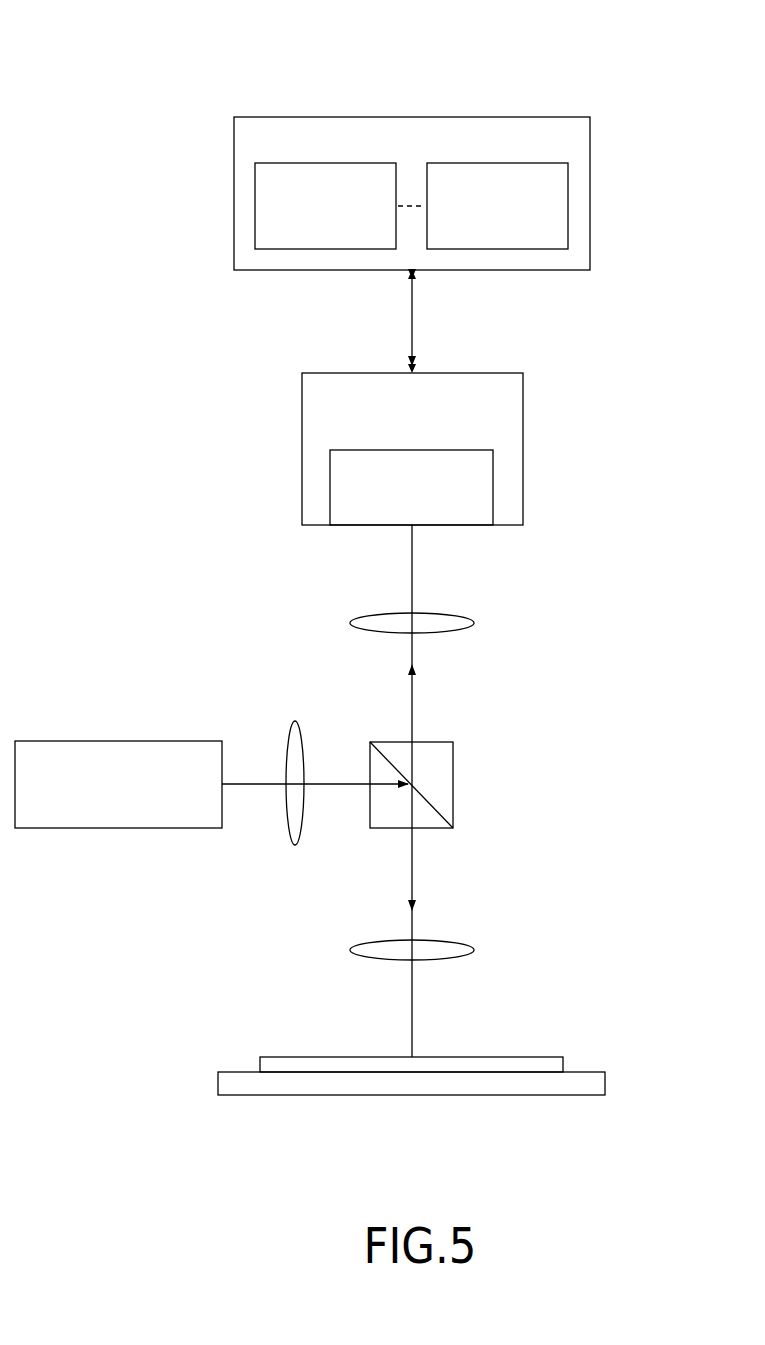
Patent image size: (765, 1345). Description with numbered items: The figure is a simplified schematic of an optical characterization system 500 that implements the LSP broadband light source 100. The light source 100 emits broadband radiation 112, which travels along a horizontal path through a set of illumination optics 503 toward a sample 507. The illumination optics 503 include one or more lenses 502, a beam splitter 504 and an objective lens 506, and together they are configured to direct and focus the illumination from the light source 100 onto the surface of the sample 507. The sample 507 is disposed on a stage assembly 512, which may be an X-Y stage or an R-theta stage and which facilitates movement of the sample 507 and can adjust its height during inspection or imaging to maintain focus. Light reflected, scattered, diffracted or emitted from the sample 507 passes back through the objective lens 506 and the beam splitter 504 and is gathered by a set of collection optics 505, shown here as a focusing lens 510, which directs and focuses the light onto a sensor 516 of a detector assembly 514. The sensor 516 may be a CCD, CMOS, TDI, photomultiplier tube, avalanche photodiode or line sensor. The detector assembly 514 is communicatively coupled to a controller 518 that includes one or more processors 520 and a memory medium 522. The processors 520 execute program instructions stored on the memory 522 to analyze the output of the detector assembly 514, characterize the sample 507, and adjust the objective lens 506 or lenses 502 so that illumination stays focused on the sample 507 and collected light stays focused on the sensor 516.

The optical characterization system 500 is at (120, 51).
The controller 518 is at (432, 152).
The processors 520 is at (346, 219).
The memory medium 522 is at (518, 219).
The detector assembly 514 is at (432, 424).
The sensor 516 is at (432, 501).
The focusing lens 510 is at (460, 614).
The set of illumination optics 503 is at (272, 617).
The set of collection optics 505 is at (507, 705).
The LSP broadband light source 100 is at (138, 796).
The broadband radiation 112 is at (255, 783).
The lenses 502 is at (293, 844).
The beam splitter 504 is at (454, 783).
The objective lens 506 is at (469, 945).
The sample 507 is at (564, 1066).
The stage assembly 512 is at (606, 1080).